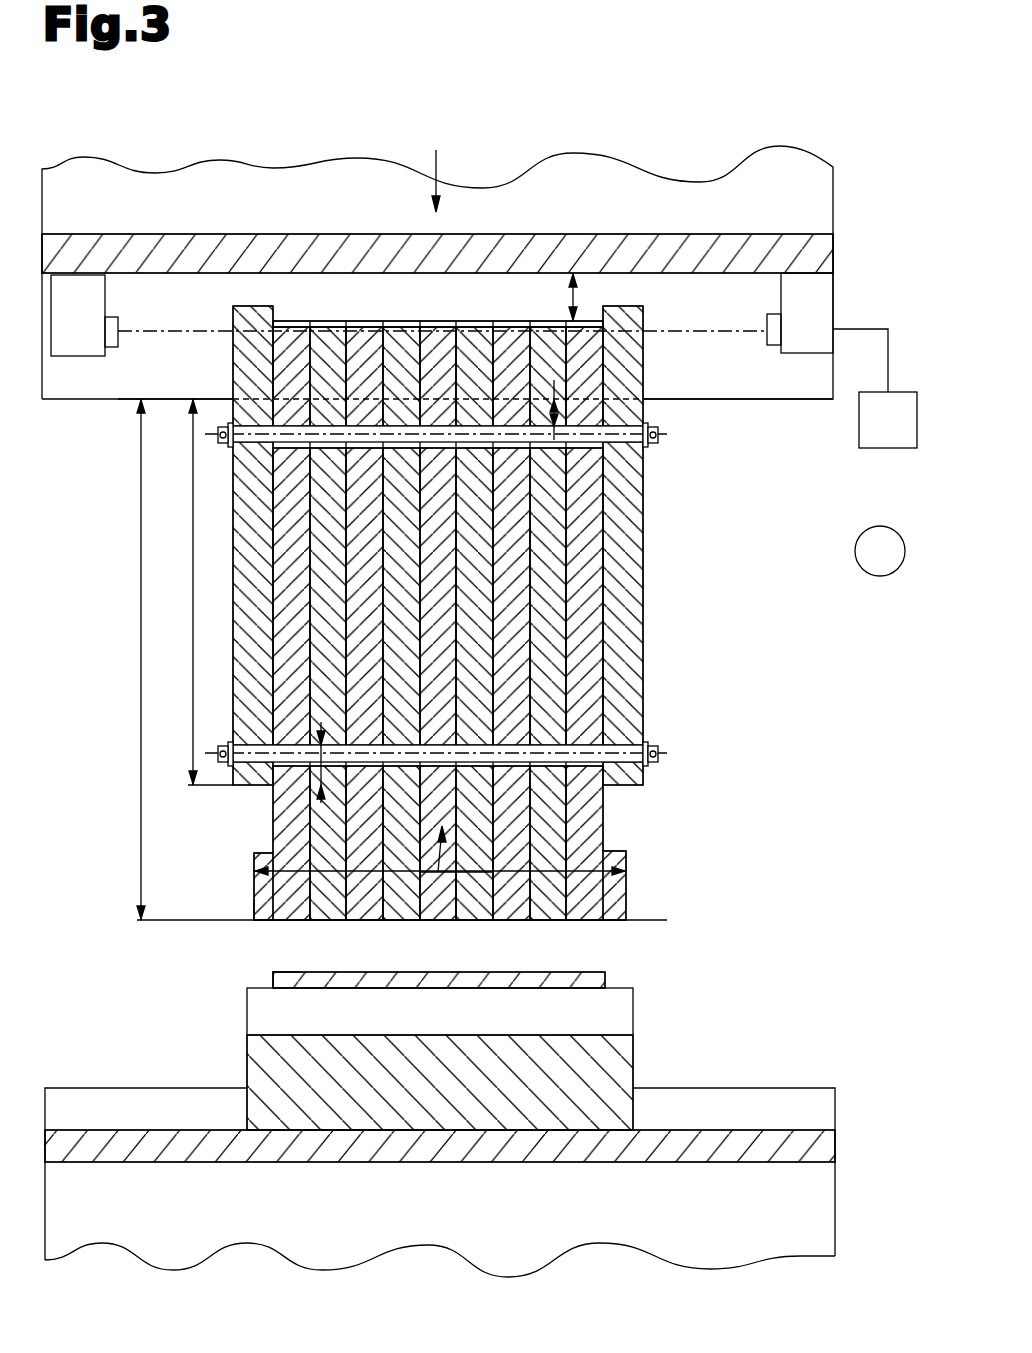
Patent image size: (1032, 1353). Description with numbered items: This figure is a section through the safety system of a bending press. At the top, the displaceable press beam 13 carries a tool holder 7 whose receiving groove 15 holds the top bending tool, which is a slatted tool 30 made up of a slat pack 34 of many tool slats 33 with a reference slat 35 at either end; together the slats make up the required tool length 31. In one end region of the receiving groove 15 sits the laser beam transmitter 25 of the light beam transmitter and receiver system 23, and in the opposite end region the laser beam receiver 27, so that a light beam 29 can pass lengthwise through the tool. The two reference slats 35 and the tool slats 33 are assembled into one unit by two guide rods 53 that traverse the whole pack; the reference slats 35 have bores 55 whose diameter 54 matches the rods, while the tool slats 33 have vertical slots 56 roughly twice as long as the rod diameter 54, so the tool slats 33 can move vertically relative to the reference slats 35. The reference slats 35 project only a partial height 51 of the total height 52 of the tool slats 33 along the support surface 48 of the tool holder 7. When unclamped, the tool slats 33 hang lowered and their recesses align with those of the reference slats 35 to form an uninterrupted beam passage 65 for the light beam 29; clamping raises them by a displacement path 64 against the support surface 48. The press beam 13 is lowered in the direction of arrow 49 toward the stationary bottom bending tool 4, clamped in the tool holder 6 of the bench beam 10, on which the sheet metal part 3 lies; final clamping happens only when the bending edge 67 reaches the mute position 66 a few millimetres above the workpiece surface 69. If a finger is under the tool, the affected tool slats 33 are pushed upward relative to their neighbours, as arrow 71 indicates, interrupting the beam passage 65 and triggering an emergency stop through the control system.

The sheet metal part 3 is at (590, 978).
The bottom bending tool 4 is at (620, 1075).
The tool holder 6 is at (812, 1108).
The tool holder 7 is at (803, 258).
The bench beam 10 is at (812, 1217).
The press beam 13 is at (808, 200).
The receiving groove 15 is at (183, 272).
The light beam transmitter and receiver system 23 is at (879, 432).
The laser beam transmitter 25 is at (83, 345).
The laser beam receiver 27 is at (805, 315).
The light beam 29 is at (667, 330).
The slatted tool 30 is at (668, 810).
The tool length 31 is at (475, 880).
The tool slat 33 is at (617, 888).
The slat pack 34 is at (173, 835).
The reference slat 35 is at (625, 578).
The support surface 48 is at (773, 400).
The arrow 49 is at (440, 165).
The partial height 51 is at (183, 472).
The total height 52 is at (140, 618).
The guide rod 53 is at (615, 437).
The diameter 54 is at (556, 393).
The bore 55 is at (225, 748).
The slot 56 is at (612, 430).
The displacement path 64 is at (576, 300).
The beam passage 65 is at (432, 326).
The mute position 66 is at (648, 910).
The bending edge 67 is at (274, 928).
The workpiece surface 69 is at (296, 963).
The arrow 71 is at (438, 872).